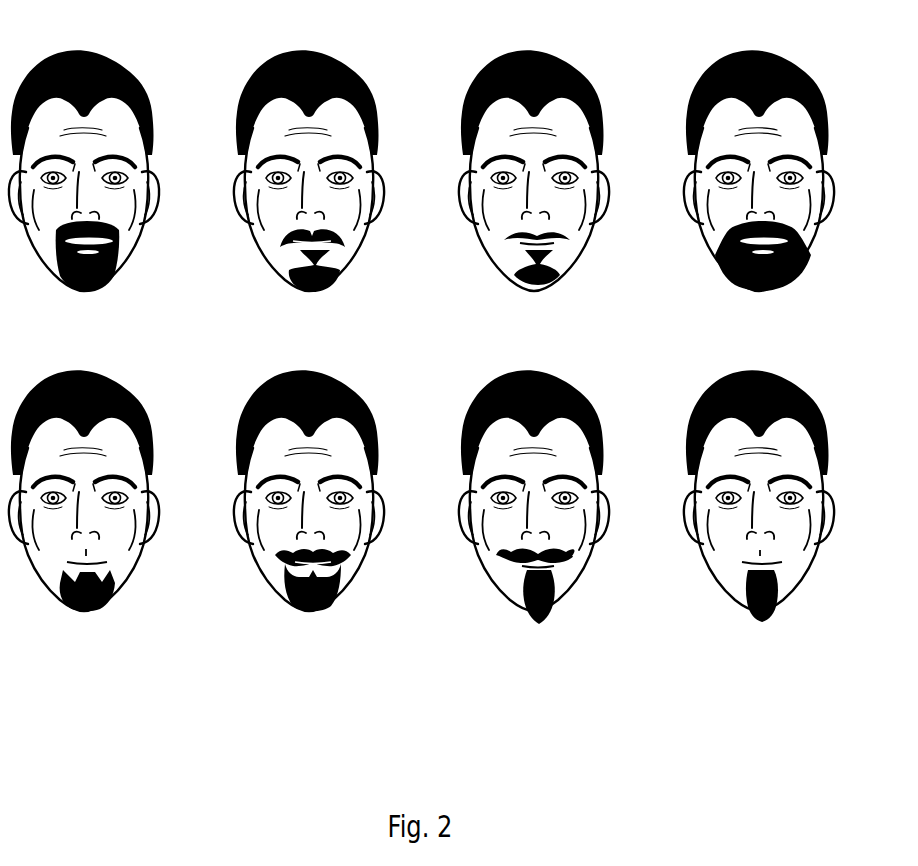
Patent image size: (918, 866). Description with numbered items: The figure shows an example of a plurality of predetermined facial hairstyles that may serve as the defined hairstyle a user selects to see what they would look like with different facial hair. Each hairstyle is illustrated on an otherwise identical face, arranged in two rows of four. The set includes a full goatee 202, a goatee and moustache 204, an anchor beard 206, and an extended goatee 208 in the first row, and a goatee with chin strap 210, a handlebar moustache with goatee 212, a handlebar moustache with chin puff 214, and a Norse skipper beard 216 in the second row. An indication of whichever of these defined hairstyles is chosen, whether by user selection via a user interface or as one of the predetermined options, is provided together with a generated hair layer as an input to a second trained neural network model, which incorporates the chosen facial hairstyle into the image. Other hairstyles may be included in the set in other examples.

The full goatee 202 is at (84, 151).
The goatee and moustache 204 is at (309, 151).
The anchor beard 206 is at (534, 151).
The extended goatee 208 is at (759, 151).
The goatee with chin strap 210 is at (84, 471).
The handlebar moustache with goatee 212 is at (309, 471).
The handlebar moustache with chin puff 214 is at (534, 477).
The Norse skipper beard 216 is at (759, 476).